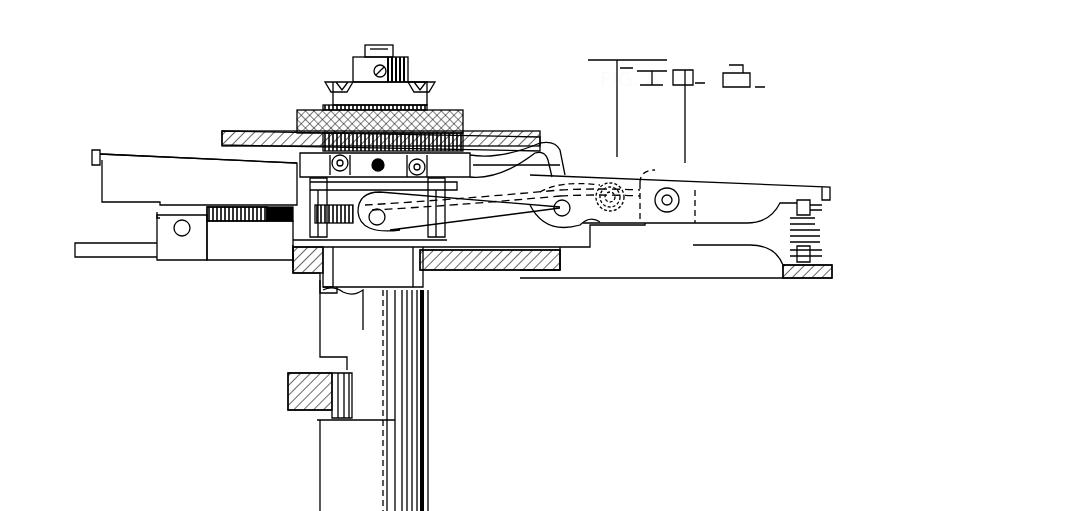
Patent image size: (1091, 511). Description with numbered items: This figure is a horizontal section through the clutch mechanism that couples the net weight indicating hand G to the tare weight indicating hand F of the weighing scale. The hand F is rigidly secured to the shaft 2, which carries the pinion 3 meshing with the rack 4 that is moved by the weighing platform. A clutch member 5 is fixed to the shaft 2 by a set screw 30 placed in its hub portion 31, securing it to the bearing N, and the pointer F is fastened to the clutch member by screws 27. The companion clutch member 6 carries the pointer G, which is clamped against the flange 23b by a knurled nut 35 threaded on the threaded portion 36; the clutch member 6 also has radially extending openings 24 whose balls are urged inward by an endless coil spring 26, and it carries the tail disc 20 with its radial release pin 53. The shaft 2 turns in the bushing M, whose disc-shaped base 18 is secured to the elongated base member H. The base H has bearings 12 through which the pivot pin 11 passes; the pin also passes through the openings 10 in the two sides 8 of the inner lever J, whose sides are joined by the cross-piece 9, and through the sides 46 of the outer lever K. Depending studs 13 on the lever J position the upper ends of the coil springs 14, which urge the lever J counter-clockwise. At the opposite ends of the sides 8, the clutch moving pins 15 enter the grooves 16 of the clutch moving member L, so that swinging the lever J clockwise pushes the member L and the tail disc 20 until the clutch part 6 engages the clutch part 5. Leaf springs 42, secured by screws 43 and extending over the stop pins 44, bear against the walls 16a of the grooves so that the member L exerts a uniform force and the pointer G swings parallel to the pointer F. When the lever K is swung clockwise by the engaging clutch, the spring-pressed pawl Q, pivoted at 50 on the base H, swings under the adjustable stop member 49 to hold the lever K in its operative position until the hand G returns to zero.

The outer lever K is at (141, 184).
The adjustable stop member 49 is at (92, 156).
The sides of lever K 46 is at (193, 172).
The net weight indicating hand G is at (228, 131).
The flange 23b is at (293, 142).
The spring-pressed pawl Q is at (158, 212).
The pivot of pawl Q 50 is at (174, 228).
The disc-shaped base 18 is at (290, 243).
The groove walls 16a is at (313, 207).
The shaft 2 is at (393, 44).
The bearing N is at (366, 51).
The set screw 30 is at (386, 72).
The hub portion 31 is at (356, 66).
The screws 27 is at (410, 82).
The tare weight indicating hand F is at (323, 84).
The clutch member 5 is at (428, 97).
The knurled nut 35 is at (302, 120).
The threaded portion 36 is at (322, 105).
The companion clutch member 6 is at (458, 124).
The radially extending openings 24 is at (378, 160).
The endless coil spring 26 is at (450, 147).
The cross-piece 9 is at (533, 153).
The release pin 53 is at (320, 188).
The tail disc 20 is at (466, 193).
The clutch moving pins 15 is at (427, 283).
The clutch moving member L is at (453, 238).
The grooves 16 is at (363, 247).
The bushing M is at (375, 290).
The pinion 3 is at (352, 392).
The rack 4 is at (300, 390).
The inner lever J is at (737, 197).
The sides of lever J 8 is at (768, 192).
The depending studs 13 is at (803, 200).
The coil springs 14 is at (790, 218).
The base member H is at (713, 250).
The bearings 12 is at (640, 227).
The stop pins 44 is at (562, 216).
The screws 43 is at (615, 180).
The leaf springs 42 is at (545, 190).
The aligned openings 10 is at (662, 188).
The pivot pin 11 is at (672, 197).